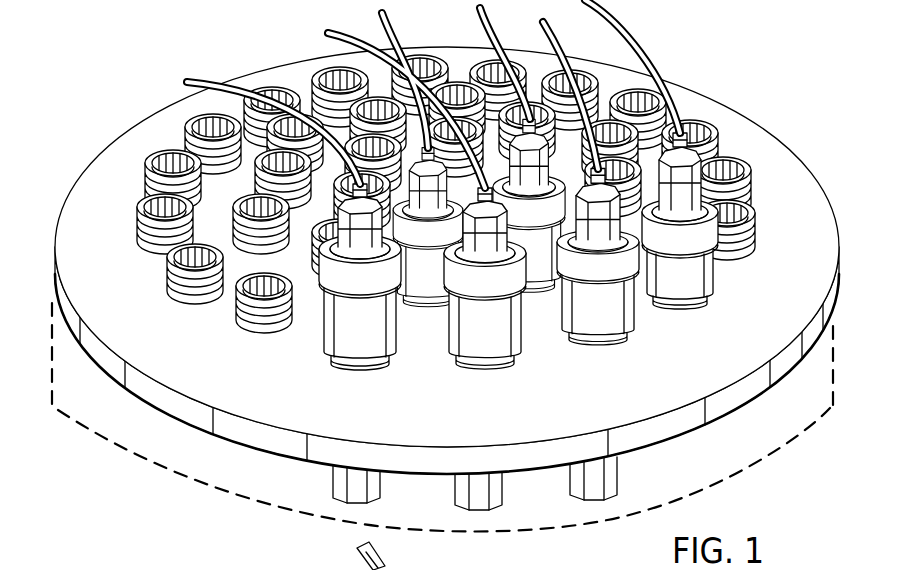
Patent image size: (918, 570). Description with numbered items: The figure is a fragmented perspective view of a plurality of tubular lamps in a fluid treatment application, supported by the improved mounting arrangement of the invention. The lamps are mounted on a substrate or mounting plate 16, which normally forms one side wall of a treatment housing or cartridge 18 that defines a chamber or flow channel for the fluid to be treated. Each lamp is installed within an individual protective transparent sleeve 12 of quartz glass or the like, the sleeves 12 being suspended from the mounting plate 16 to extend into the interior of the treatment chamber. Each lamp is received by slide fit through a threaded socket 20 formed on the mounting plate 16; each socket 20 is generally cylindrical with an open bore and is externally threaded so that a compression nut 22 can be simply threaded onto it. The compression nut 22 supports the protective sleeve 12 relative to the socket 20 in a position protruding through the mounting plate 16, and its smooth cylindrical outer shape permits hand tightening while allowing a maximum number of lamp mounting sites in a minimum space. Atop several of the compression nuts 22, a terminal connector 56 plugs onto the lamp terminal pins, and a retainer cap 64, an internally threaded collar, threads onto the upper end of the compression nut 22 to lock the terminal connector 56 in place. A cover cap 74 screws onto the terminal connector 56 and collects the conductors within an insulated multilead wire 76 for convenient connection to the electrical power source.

The transparent sleeve 12 is at (335, 480).
The mounting plate 16 is at (836, 257).
The treatment housing 18 is at (832, 375).
The threaded socket 20 is at (163, 270).
The compression nut 22 is at (563, 267).
The terminal connector 56 is at (725, 217).
The retainer cap 64 is at (721, 274).
The cover cap 74 is at (717, 172).
The multilead wire 76 is at (240, 92).